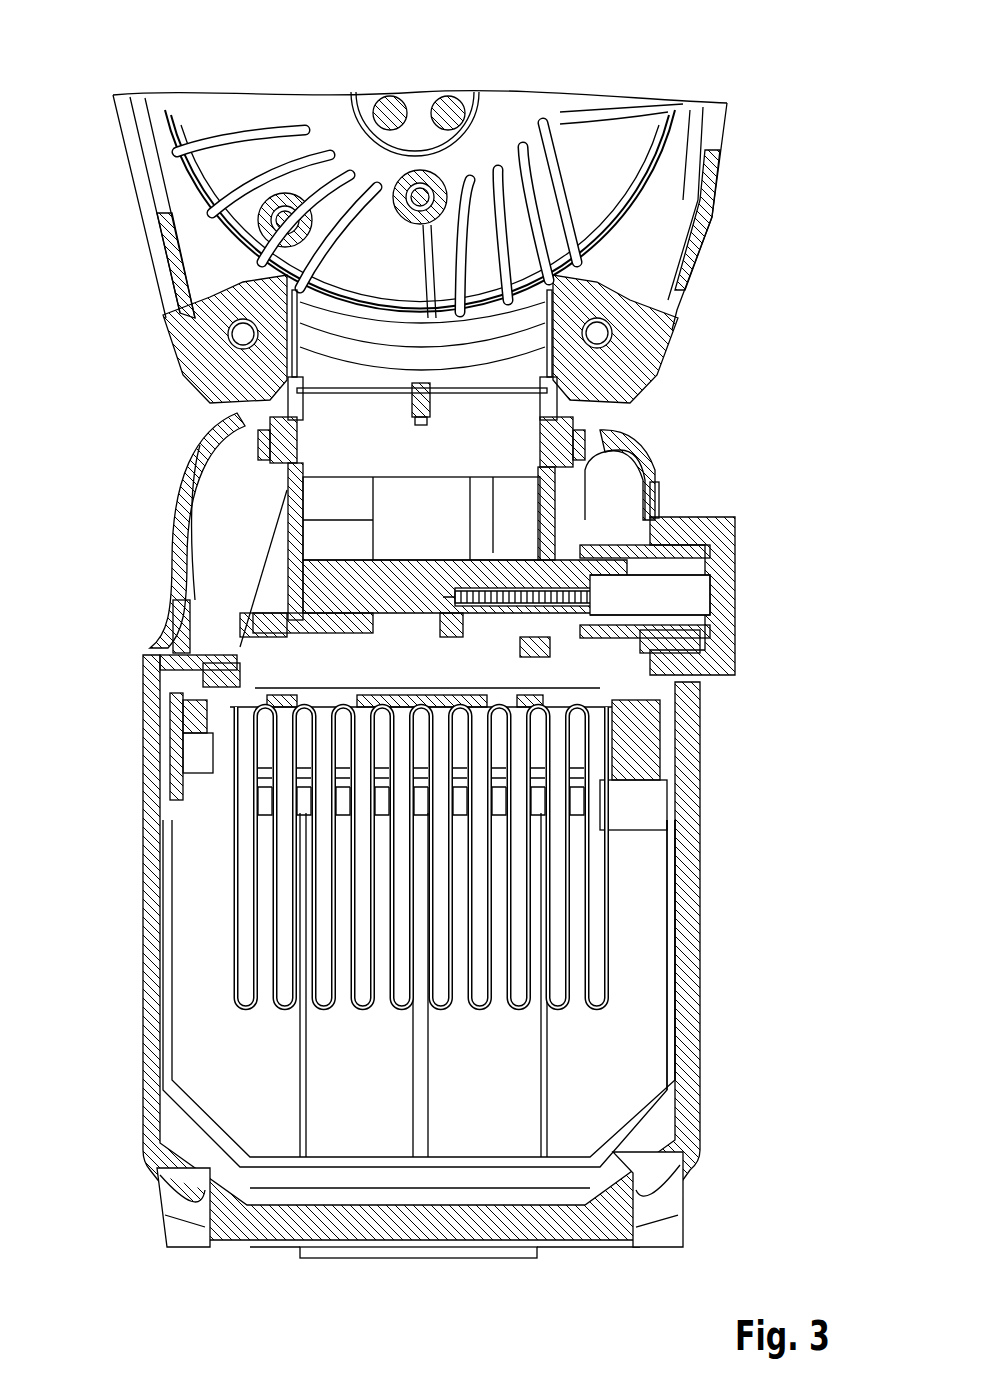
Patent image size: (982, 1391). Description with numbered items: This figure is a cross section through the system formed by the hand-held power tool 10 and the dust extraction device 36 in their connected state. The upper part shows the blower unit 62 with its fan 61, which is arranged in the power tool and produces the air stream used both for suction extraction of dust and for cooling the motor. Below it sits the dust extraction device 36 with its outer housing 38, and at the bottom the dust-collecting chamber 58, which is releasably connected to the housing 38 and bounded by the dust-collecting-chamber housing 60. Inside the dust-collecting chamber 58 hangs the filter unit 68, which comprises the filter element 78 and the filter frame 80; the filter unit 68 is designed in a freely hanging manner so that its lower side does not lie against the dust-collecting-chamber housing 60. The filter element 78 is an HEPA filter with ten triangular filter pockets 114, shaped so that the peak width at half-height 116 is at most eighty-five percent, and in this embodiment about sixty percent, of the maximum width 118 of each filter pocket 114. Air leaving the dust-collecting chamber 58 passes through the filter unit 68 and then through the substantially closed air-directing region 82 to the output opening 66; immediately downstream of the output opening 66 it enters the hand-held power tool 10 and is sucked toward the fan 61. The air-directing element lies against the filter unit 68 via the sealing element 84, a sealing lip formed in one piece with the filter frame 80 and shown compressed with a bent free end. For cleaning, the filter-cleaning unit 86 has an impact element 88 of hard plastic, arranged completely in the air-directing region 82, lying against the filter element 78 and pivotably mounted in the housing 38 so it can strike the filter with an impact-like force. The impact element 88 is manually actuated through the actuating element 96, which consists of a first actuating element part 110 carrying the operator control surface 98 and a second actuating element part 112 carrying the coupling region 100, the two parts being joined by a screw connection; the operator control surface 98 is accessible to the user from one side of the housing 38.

The hand-held power tool 10 is at (790, 75).
The dust extraction device 36 is at (765, 815).
The housing 38 is at (693, 742).
The dust-collecting chamber 58 is at (705, 1190).
The dust-collecting-chamber housing 60 is at (690, 1060).
The fan 61 is at (217, 140).
The blower unit 62 is at (167, 155).
The output opening 66 is at (303, 432).
The filter unit 68 is at (180, 652).
The filter element 78 is at (237, 897).
The filter frame 80 is at (180, 707).
The air-directing region 82 is at (345, 525).
The sealing element 84 is at (205, 690).
The filter-cleaning unit 86 is at (668, 500).
The impact element 88 is at (447, 517).
The actuating element 96 is at (648, 530).
The operator control surface 98 is at (705, 520).
The coupling region 100 is at (465, 560).
The first actuating element part 110 is at (703, 548).
The second actuating element part 112 is at (600, 597).
The filter pockets 114 is at (246, 1012).
The peak width at half-height 116 is at (250, 863).
The maximum width 118 is at (168, 760).